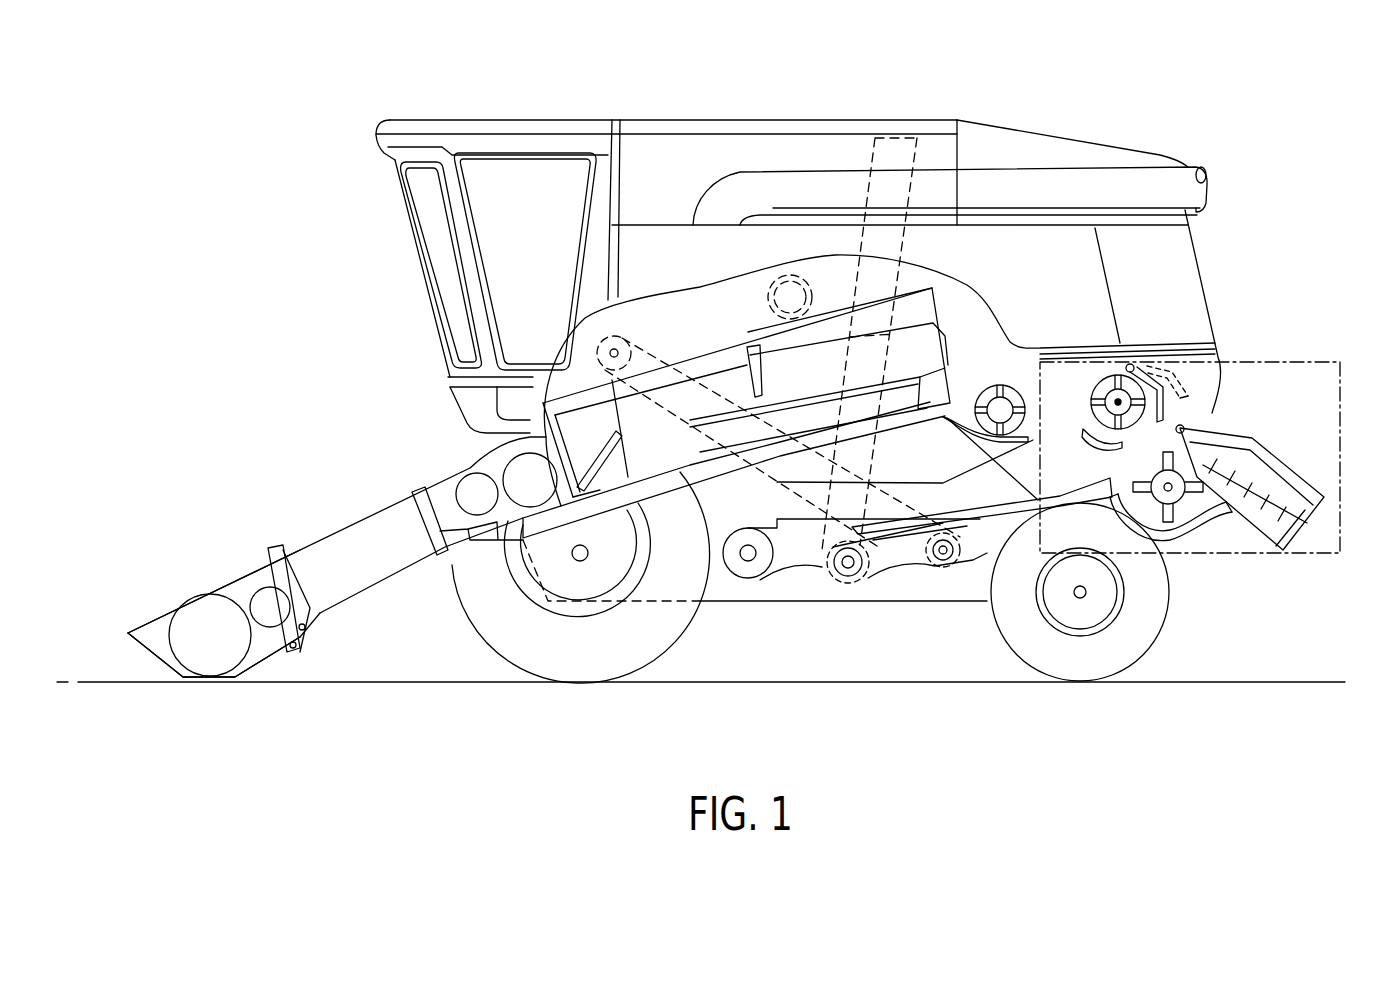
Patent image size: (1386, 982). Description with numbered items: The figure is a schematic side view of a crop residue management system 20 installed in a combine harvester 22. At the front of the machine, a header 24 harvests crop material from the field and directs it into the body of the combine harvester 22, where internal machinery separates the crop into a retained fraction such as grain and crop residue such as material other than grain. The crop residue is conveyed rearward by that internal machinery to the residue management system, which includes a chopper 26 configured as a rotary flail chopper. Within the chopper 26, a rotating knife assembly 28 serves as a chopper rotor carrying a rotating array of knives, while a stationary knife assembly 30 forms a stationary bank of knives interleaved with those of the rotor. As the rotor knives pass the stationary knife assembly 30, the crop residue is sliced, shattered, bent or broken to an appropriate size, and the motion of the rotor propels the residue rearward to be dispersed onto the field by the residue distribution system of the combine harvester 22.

The crop residue management system 20 is at (1265, 556).
The combine harvester 22 is at (262, 131).
The header 24 is at (234, 578).
The chopper 26 is at (1185, 461).
The rotating knife assembly 28 is at (1152, 478).
The stationary knife assembly 30 is at (1186, 516).